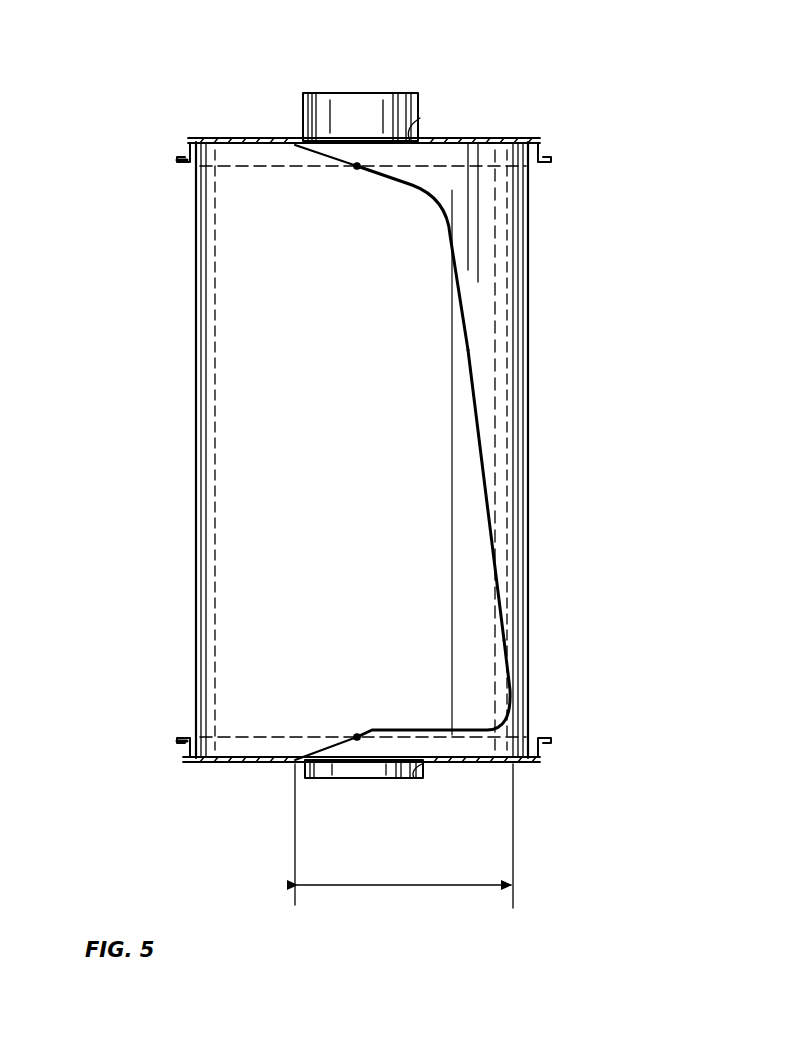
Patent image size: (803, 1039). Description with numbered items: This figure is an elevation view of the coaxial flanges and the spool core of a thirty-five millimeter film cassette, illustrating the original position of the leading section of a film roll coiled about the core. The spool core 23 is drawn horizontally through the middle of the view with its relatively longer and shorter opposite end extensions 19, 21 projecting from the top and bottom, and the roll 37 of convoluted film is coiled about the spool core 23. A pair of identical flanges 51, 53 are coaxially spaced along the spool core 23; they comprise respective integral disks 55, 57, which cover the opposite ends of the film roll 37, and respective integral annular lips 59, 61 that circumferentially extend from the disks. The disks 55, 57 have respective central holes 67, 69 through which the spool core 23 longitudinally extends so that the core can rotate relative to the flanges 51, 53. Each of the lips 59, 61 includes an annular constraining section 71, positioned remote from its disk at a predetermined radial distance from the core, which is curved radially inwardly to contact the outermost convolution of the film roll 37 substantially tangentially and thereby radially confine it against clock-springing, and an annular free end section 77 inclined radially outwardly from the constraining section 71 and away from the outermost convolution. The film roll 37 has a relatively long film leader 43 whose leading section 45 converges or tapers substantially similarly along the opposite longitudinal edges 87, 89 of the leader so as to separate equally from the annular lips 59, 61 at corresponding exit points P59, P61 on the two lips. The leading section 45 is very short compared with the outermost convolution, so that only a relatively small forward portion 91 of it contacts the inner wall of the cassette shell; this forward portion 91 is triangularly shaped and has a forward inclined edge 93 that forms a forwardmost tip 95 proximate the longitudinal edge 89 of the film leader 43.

The longer opposite end extension 19 is at (383, 73).
The shorter opposite end extension 21 is at (368, 809).
The spool core 23 is at (299, 120).
The film roll 37 is at (291, 407).
The film leader 43 is at (207, 236).
The leading section 45 is at (398, 896).
The flange 51 is at (547, 140).
The flange 53 is at (550, 760).
The disk 55 is at (486, 140).
The disk 57 is at (225, 762).
The annular lip 59 is at (366, 125).
The annular lip 61 is at (360, 800).
The central hole 67 is at (412, 138).
The central hole 69 is at (412, 778).
The annular constraining section 71 is at (184, 160).
The annular free end section 77 is at (178, 164).
The longitudinal edge 87 is at (250, 140).
The longitudinal edge 89 is at (268, 762).
The forward portion 91 is at (452, 452).
The forward inclined edge 93 is at (464, 308).
The forwardmost tip 95 is at (508, 703).
The exit point P59 is at (357, 170).
The exit point P61 is at (365, 690).